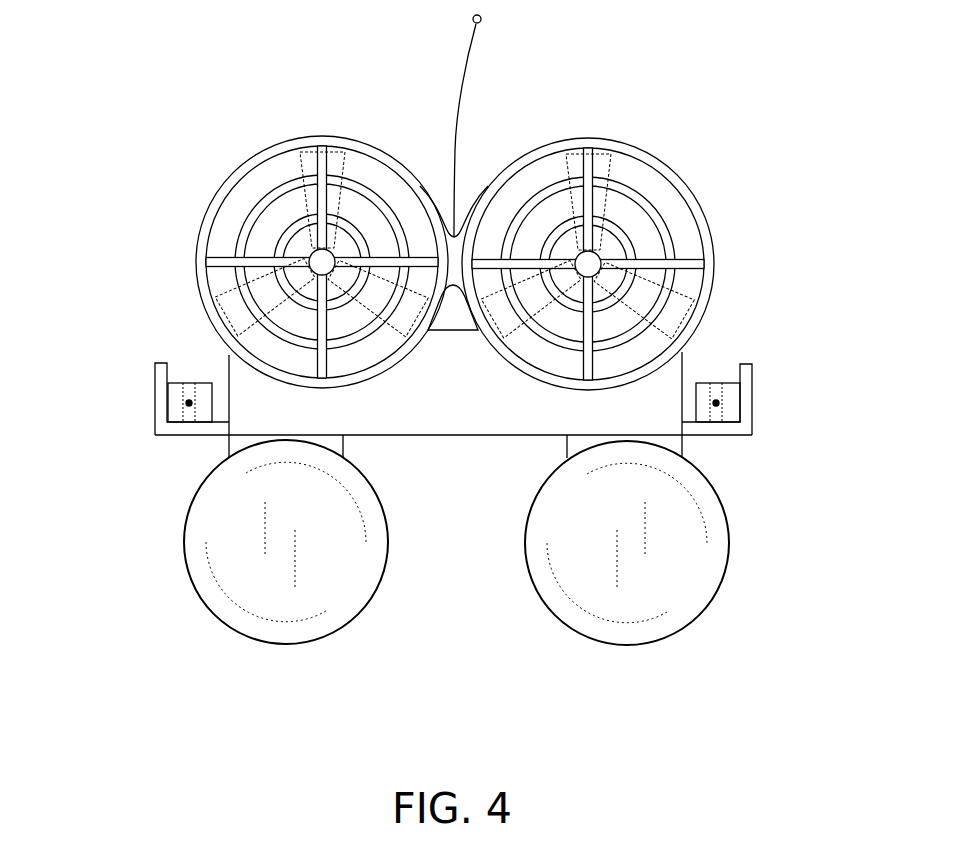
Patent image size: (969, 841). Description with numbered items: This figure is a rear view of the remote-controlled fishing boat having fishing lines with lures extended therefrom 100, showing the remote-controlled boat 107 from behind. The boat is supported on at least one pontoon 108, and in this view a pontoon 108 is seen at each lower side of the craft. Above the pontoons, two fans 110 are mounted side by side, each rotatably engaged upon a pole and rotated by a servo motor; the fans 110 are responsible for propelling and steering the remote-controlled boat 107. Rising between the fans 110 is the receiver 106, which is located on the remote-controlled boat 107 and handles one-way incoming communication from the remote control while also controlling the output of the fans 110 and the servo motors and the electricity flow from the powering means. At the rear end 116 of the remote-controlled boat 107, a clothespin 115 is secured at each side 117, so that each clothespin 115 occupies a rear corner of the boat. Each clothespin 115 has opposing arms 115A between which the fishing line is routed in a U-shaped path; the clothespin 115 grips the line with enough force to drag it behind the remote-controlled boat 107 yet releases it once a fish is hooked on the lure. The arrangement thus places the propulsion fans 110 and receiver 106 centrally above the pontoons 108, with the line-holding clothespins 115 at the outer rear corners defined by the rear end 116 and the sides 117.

The remote-controlled fishing boat having fishing lines with lures extended therefro 100 is at (418, 365).
The remote-controlled boat 107 is at (696, 100).
The receiver 106 is at (457, 107).
The fan 110 is at (310, 165).
The clothespin 115 is at (190, 383).
The opposing arms 115A is at (700, 384).
The rear end 116 is at (435, 411).
The side 117 is at (155, 410).
The pontoon 108 is at (318, 625).